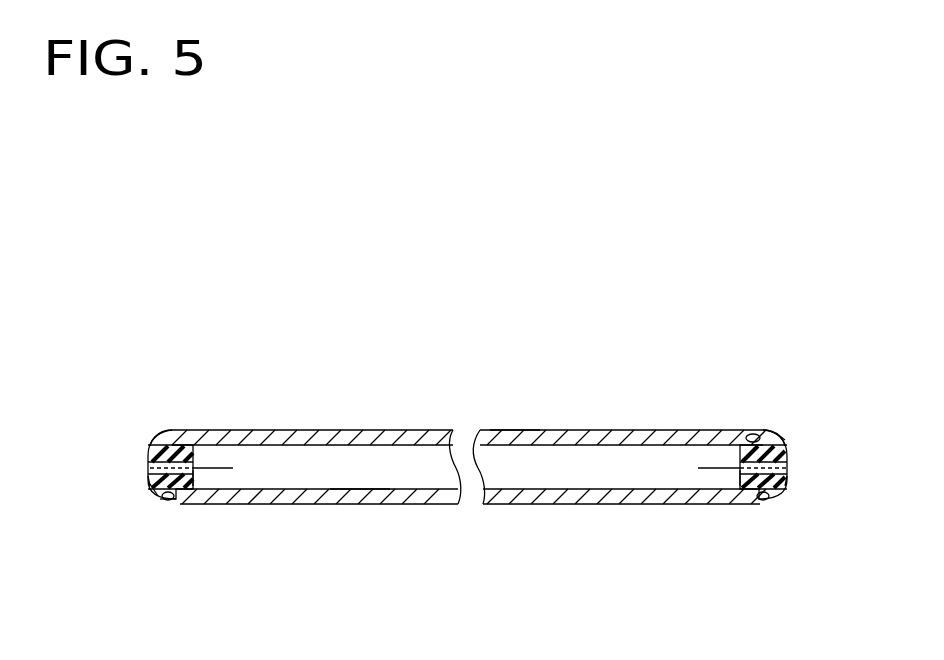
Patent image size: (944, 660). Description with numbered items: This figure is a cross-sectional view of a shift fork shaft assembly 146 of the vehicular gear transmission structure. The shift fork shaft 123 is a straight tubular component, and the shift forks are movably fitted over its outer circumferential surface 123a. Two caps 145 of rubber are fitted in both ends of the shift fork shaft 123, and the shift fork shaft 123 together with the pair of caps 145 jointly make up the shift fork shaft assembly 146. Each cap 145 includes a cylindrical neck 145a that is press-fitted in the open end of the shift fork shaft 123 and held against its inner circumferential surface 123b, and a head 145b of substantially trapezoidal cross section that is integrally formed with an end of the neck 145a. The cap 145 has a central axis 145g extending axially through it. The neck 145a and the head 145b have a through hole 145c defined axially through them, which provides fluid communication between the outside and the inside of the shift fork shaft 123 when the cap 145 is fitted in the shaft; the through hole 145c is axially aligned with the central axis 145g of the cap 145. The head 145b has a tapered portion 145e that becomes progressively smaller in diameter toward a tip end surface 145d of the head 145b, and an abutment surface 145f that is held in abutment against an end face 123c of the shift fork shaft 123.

The shift fork shaft 123 is at (418, 430).
The outer circumferential surface 123a is at (511, 429).
The inner circumferential surface 123b is at (372, 486).
The end face 123c is at (160, 436).
The cap 145 is at (148, 453).
The cylindrical neck 145a is at (174, 500).
The head 145b is at (150, 482).
The through hole 145c is at (192, 477).
The tip end surface 145d is at (150, 468).
The tapered portion 145e is at (152, 496).
The abutment surface 145f is at (168, 500).
The central axis 145g is at (228, 466).
The shift fork shaft assembly 146 is at (294, 373).